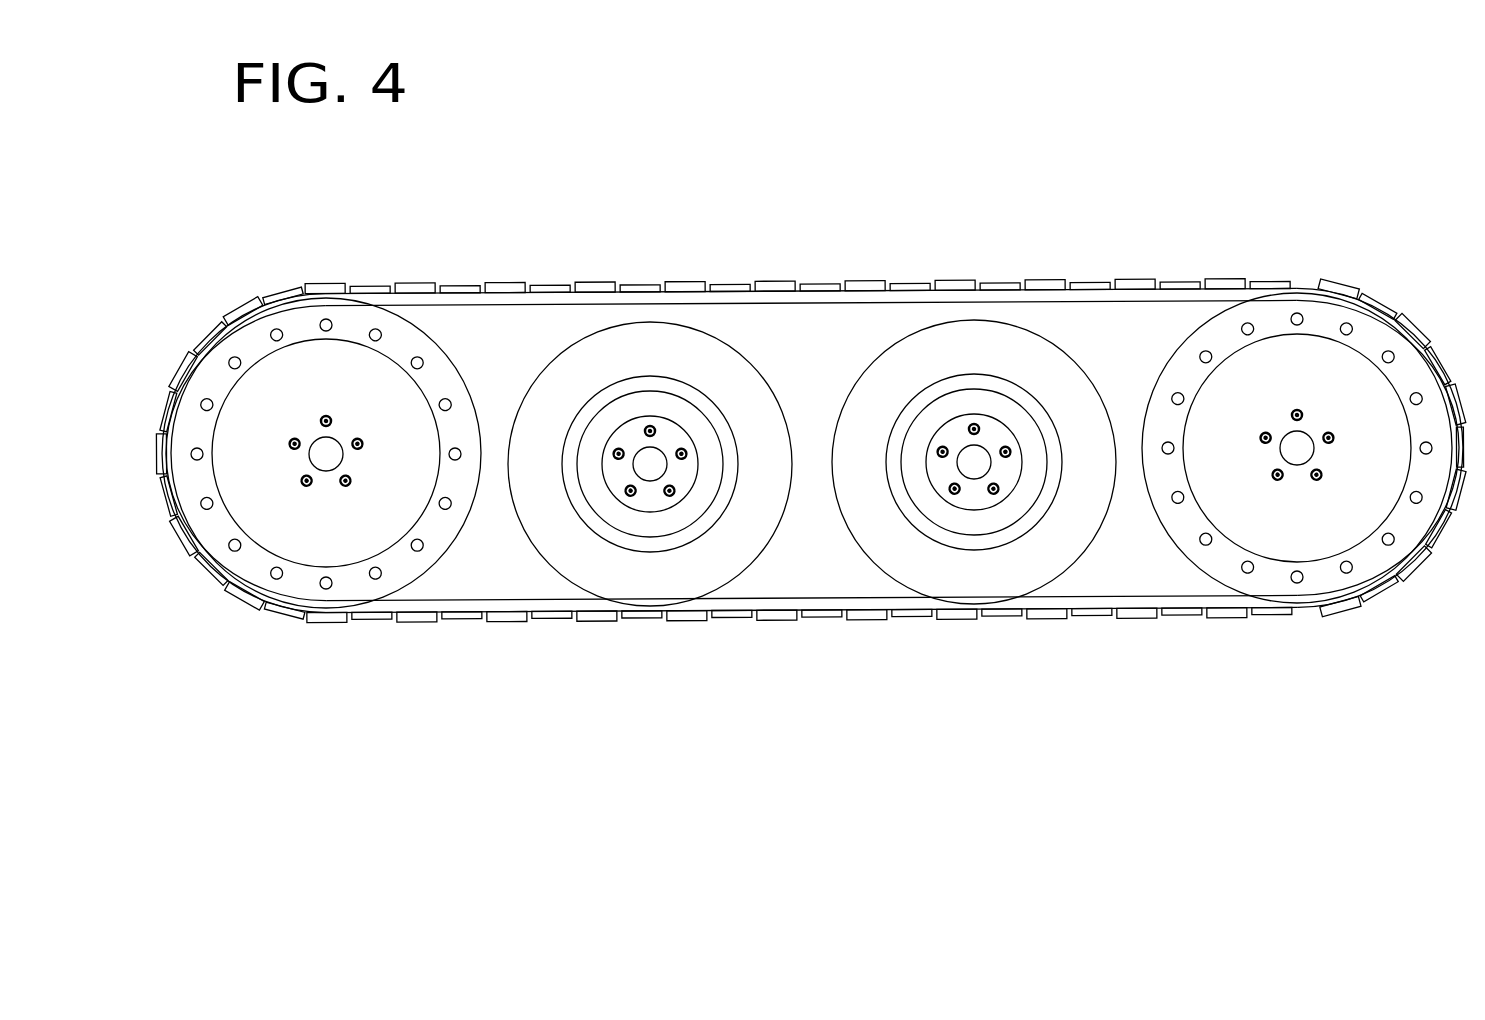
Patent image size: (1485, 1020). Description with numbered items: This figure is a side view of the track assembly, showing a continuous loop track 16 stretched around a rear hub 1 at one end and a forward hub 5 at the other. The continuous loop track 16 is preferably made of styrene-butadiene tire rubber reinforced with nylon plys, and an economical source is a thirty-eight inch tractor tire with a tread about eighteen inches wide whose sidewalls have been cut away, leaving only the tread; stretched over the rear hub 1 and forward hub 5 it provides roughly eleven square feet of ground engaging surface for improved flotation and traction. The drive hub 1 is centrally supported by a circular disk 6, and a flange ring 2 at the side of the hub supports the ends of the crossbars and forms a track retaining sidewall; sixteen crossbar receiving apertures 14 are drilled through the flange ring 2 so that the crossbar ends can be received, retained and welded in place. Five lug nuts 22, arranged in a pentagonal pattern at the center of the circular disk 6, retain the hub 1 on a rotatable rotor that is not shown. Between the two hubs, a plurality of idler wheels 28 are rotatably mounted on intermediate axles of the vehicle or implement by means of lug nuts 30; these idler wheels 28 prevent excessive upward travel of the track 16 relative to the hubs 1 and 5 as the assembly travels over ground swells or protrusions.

The rear hub 1 is at (311, 470).
The flange ring 2 is at (250, 350).
The forward hub 5 is at (1178, 586).
The circular disk 6 is at (310, 523).
The crossbar receiving apertures 14 is at (377, 581).
The continuous loop track 16 is at (740, 280).
The lug nuts 22 is at (323, 416).
The idler wheels 28 is at (654, 530).
The lug nuts 30 is at (678, 494).